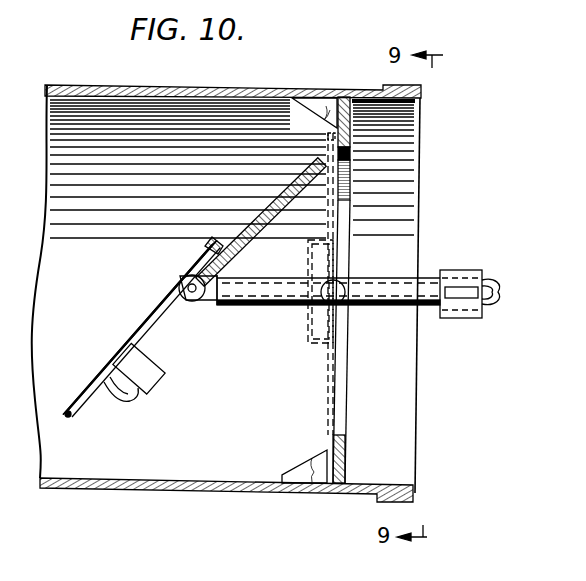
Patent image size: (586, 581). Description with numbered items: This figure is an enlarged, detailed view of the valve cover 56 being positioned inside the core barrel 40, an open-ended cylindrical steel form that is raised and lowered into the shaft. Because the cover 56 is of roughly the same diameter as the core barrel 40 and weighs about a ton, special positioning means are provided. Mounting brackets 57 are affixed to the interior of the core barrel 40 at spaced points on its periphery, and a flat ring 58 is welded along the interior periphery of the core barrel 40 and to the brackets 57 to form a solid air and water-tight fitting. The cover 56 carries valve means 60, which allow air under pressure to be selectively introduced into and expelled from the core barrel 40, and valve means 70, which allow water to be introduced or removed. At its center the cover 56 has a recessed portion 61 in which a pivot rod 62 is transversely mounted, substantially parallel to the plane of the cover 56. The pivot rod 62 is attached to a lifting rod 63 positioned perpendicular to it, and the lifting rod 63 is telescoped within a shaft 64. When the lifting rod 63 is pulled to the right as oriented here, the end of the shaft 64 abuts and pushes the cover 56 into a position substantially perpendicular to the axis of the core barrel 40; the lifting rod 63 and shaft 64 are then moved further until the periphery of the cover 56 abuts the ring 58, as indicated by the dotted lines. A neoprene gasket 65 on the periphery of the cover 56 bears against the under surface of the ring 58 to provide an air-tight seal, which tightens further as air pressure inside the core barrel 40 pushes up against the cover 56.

The core barrel 40 is at (257, 489).
The valve cover 56 is at (258, 219).
The mounting bracket 57 is at (313, 477).
The flat ring 58 is at (346, 445).
The valve means 60 is at (137, 393).
The recessed portion 61 is at (181, 268).
The pivot rod 62 is at (192, 297).
The lifting rod 63 is at (213, 302).
The shaft 64 is at (433, 279).
The neoprene gasket 65 is at (72, 416).
The valve means 70 is at (165, 366).